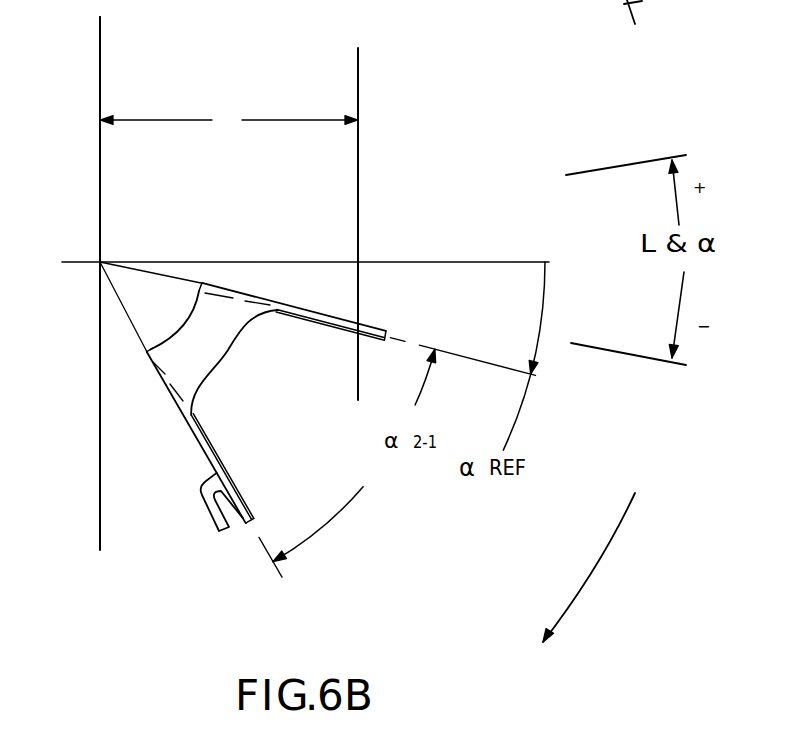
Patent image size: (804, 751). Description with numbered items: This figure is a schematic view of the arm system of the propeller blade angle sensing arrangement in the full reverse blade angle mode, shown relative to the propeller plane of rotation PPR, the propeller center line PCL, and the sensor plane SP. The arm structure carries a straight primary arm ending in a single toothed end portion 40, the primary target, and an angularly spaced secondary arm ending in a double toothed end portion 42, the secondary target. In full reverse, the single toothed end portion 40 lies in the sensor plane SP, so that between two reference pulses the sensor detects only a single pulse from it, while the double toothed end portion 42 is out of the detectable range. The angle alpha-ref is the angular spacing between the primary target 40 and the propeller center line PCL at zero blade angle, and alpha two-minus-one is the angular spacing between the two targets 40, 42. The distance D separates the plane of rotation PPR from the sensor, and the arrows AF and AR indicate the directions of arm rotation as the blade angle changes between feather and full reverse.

The single toothed end portion 40 is at (405, 315).
The double toothed end portion 42 is at (265, 535).
The distance between plane of rotation and sensor D is at (229, 121).
The propeller center line PCL is at (80, 263).
The propeller plane of rotation PPR is at (100, 53).
The sensor plane SP is at (358, 80).
The forward angular direction AF is at (662, 12).
The rearward angular direction AR is at (565, 618).